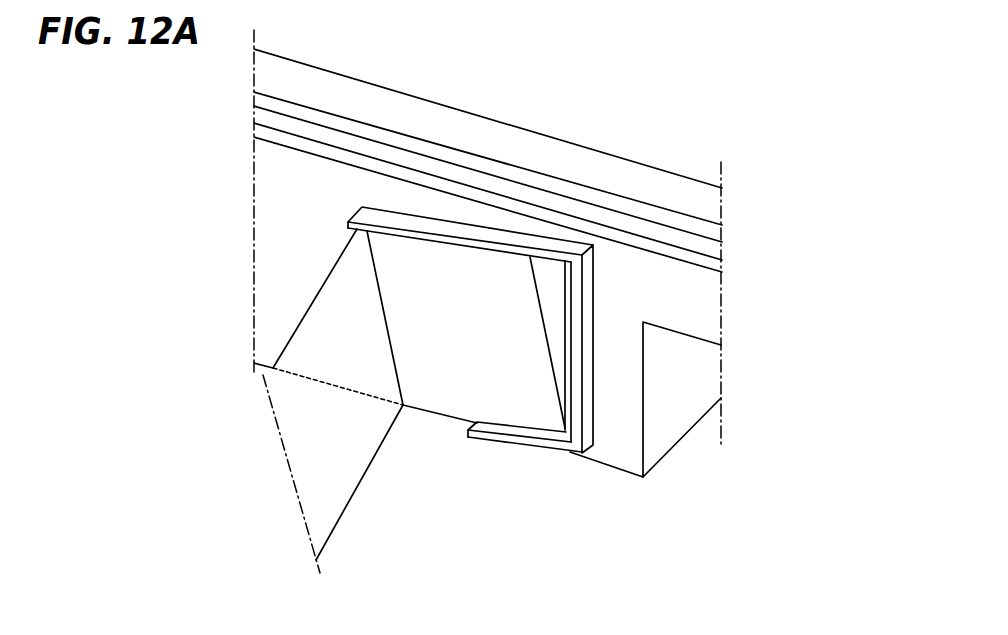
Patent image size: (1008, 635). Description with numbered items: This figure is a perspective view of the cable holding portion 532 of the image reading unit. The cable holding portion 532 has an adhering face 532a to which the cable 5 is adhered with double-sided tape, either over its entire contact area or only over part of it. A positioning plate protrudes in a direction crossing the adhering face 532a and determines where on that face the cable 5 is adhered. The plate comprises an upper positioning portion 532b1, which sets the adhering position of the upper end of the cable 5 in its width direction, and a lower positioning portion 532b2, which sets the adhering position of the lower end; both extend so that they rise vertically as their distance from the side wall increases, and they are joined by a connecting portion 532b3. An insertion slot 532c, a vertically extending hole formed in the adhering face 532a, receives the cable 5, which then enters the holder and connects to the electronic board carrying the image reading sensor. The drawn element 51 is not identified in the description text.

The cable 5 is at (328, 477).
The reflecting mirror 51 is at (387, 330).
The cable holding portion 532 is at (527, 448).
The adhering face 532a is at (292, 187).
The upper positioning portion 532b1 is at (468, 230).
The lower positioning portion 532b2 is at (503, 440).
The connecting portion 532b3 is at (582, 343).
The insertion slot 532c is at (570, 287).